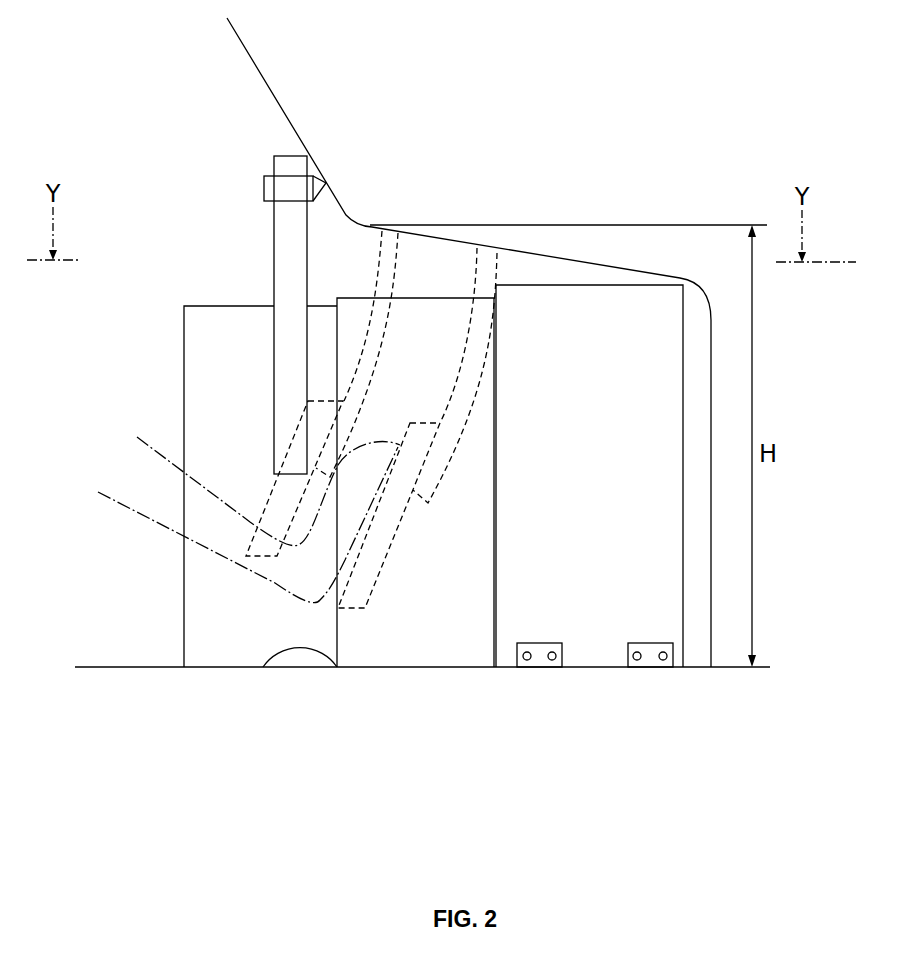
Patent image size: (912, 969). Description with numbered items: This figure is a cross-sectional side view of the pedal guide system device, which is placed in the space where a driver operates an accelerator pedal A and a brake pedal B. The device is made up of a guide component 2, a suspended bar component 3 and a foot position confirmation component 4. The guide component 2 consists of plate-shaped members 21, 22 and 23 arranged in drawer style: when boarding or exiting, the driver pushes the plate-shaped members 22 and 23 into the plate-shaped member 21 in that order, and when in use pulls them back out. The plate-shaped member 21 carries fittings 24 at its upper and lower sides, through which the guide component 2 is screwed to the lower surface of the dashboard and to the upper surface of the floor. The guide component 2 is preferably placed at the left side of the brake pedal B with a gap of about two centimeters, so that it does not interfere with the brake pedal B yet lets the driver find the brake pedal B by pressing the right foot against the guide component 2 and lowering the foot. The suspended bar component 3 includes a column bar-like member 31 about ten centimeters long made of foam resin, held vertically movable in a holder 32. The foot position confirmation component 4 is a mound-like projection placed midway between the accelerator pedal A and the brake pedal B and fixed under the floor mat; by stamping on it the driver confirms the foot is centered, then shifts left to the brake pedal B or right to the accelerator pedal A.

The guide component 2 is at (405, 538).
The suspended bar component 3 is at (248, 136).
The foot position confirmation component 4 is at (298, 663).
The plate-shaped member 21 is at (596, 665).
The plate-shaped member 22 is at (408, 662).
The plate-shaped member 23 is at (223, 663).
The fittings 24 is at (540, 665).
The bar-like member 31 is at (274, 232).
The holder 32 is at (264, 189).
The accelerator pedal A is at (372, 583).
The brake pedal B is at (272, 495).